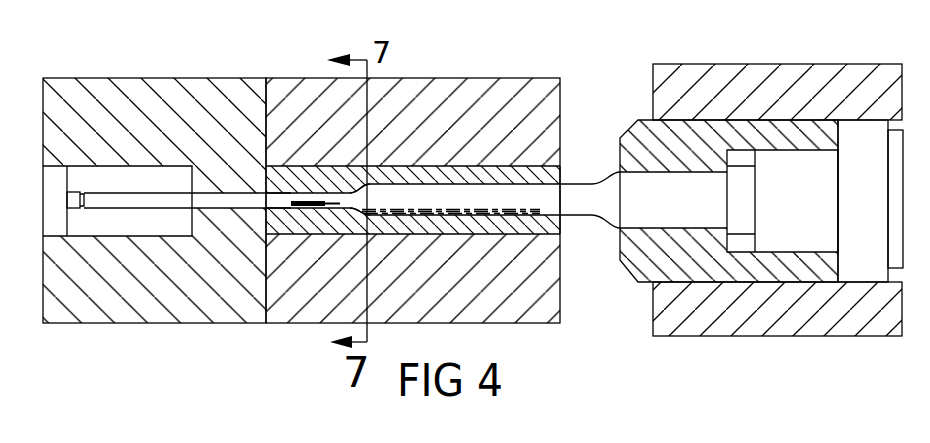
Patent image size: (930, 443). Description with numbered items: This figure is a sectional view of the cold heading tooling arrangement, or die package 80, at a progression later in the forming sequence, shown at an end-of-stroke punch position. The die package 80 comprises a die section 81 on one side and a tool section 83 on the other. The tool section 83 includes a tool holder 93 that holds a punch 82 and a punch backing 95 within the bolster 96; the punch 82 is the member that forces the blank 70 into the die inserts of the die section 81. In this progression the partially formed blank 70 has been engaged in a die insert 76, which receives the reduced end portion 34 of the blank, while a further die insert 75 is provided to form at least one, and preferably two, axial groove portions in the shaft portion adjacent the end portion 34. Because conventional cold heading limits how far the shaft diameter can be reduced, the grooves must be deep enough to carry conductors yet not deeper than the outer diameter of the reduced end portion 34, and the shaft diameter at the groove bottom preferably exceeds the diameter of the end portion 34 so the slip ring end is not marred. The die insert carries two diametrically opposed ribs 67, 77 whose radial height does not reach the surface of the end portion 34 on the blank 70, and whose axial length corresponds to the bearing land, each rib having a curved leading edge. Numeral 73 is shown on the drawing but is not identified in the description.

The end portion 34 is at (301, 205).
The rib 67 is at (350, 212).
The blank 70 is at (478, 200).
The die liner right portion 73 is at (507, 177).
The die insert 75 is at (393, 184).
The die insert 76 is at (303, 177).
The rib 77 is at (338, 177).
The die package 80 is at (577, 354).
The die section 81 is at (181, 327).
The punch 82 is at (630, 188).
The tool section 83 is at (761, 220).
The tool holder 93 is at (679, 143).
The punch backing 95 is at (860, 143).
The bolster 96 is at (852, 320).